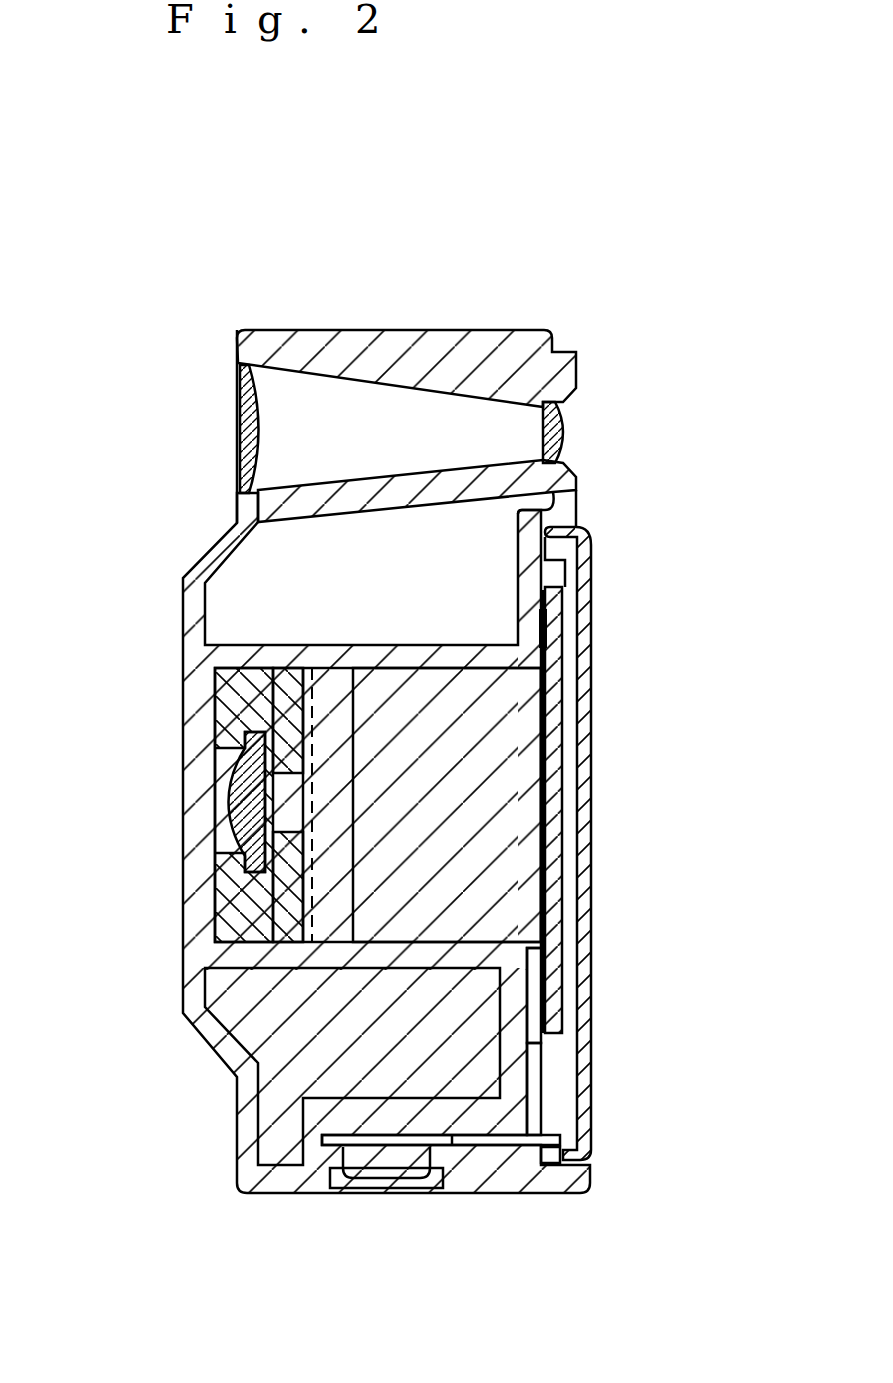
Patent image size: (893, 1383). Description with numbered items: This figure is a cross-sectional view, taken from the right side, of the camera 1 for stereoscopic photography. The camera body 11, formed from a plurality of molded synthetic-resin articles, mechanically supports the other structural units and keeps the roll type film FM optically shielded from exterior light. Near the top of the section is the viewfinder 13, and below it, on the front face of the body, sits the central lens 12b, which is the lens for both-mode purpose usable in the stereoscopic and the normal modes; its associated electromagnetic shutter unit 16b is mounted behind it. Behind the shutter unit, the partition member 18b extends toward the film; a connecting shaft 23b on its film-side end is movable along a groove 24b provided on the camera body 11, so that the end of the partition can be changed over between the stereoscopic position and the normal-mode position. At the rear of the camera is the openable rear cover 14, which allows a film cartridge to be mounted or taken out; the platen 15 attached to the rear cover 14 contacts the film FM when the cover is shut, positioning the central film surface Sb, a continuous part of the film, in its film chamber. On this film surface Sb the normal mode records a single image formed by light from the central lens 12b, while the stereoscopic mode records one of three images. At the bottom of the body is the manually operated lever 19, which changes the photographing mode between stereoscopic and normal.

The camera 1 is at (275, 180).
The camera body 11 is at (387, 330).
The viewfinder 13 is at (237, 390).
The central lens 12b is at (233, 802).
The electromagnetic shutter unit 16b is at (287, 892).
The partition member 18b is at (493, 717).
The platen 15 is at (553, 755).
The rear cover 14 is at (585, 870).
The roll type film FM is at (542, 840).
The central film surface Sb is at (542, 905).
The groove 24b is at (533, 1043).
The connecting shaft 23b is at (533, 1081).
The lever 19 is at (380, 1165).